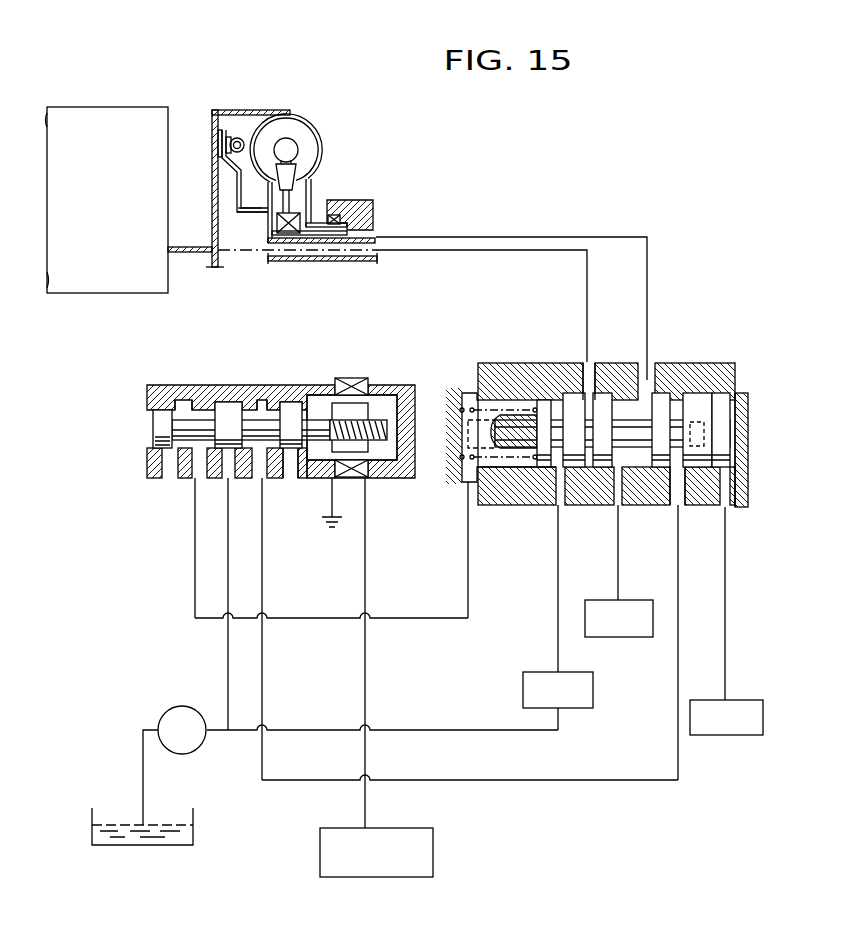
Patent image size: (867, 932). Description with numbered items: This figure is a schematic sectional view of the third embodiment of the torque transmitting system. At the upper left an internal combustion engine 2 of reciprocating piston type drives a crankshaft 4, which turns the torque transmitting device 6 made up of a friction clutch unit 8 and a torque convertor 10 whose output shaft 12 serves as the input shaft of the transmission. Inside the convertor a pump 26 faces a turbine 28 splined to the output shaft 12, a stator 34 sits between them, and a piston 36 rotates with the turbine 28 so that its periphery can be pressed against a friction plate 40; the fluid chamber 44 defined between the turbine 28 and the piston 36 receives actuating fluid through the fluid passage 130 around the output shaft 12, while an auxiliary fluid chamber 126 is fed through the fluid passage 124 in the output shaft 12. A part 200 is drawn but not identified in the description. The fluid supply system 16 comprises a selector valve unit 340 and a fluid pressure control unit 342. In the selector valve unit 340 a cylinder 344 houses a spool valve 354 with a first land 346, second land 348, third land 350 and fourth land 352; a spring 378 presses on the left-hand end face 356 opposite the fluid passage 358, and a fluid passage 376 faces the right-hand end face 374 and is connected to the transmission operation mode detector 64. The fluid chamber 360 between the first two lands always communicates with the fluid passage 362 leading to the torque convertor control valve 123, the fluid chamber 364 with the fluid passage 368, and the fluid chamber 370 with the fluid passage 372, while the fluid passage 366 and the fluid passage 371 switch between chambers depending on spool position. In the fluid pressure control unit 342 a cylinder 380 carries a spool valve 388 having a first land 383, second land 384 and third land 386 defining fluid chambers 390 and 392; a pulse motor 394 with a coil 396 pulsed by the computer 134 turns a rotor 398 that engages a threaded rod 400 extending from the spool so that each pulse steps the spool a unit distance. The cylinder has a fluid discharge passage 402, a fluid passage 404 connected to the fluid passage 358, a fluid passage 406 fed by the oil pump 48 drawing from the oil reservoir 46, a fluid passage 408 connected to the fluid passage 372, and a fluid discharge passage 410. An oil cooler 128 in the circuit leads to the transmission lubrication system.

The internal combustion engine 2 is at (125, 115).
The crankshaft 4 is at (193, 256).
The torque transmitting device 6 is at (263, 80).
The friction clutch unit 8 is at (221, 126).
The torque convertor 10 is at (314, 117).
The output shaft 12 is at (362, 262).
The fluid supply system 16 is at (158, 631).
The pump 26 is at (311, 150).
The turbine 28 is at (269, 138).
The stator 34 is at (292, 180).
The piston 36 is at (214, 188).
The friction plate 40 is at (213, 140).
The fluid chamber 44 is at (247, 196).
The oil reservoir 46 is at (143, 850).
The oil pump 48 is at (174, 765).
The transmission operation mode detector 64 is at (726, 717).
The torque convertor control valve 123 is at (558, 690).
The fluid passage 124 is at (310, 246).
The auxiliary fluid chamber 126 is at (230, 200).
The oil cooler 128 is at (619, 618).
The fluid passage 130 is at (352, 222).
The computer 134 is at (376, 852).
The roller 200 is at (238, 134).
The selector valve unit 340 is at (606, 514).
The fluid pressure control unit 342 is at (247, 553).
The second control valve 344 is at (700, 400).
The first land 346 is at (541, 418).
The second land 348 is at (603, 418).
The third land 350 is at (680, 416).
The fourth land 352 is at (735, 416).
The spool valve 354 is at (518, 418).
The left-hand end face 356 is at (530, 467).
The fluid passage 358 is at (467, 482).
The fluid chamber 360 is at (572, 418).
The fluid passage 362 is at (560, 490).
The fluid chamber 364 is at (642, 490).
The fluid passage 366 is at (590, 385).
The fluid passage 368 is at (618, 488).
The fluid chamber 370 is at (718, 416).
The fluid passage 371 is at (652, 385).
The fluid passage 372 is at (678, 487).
The right-hand end face 374 is at (732, 445).
The fluid passage 376 is at (736, 487).
The spring 378 is at (466, 394).
The cylinder 380 is at (178, 400).
The first land 383 is at (160, 432).
The second land 384 is at (225, 414).
The third land 386 is at (290, 414).
The spool valve 388 is at (156, 422).
The fluid chamber 390 is at (193, 398).
The fluid chamber 392 is at (262, 398).
The pulse motor 394 is at (373, 492).
The coil 396 is at (347, 378).
The rotor 398 is at (362, 405).
The externally threaded rod 400 is at (386, 425).
The fluid discharge passage 402 is at (155, 465).
The fluid passage 404 is at (197, 465).
The fluid passage 406 is at (208, 604).
The fluid passage 408 is at (260, 466).
The fluid discharge passage 410 is at (290, 466).